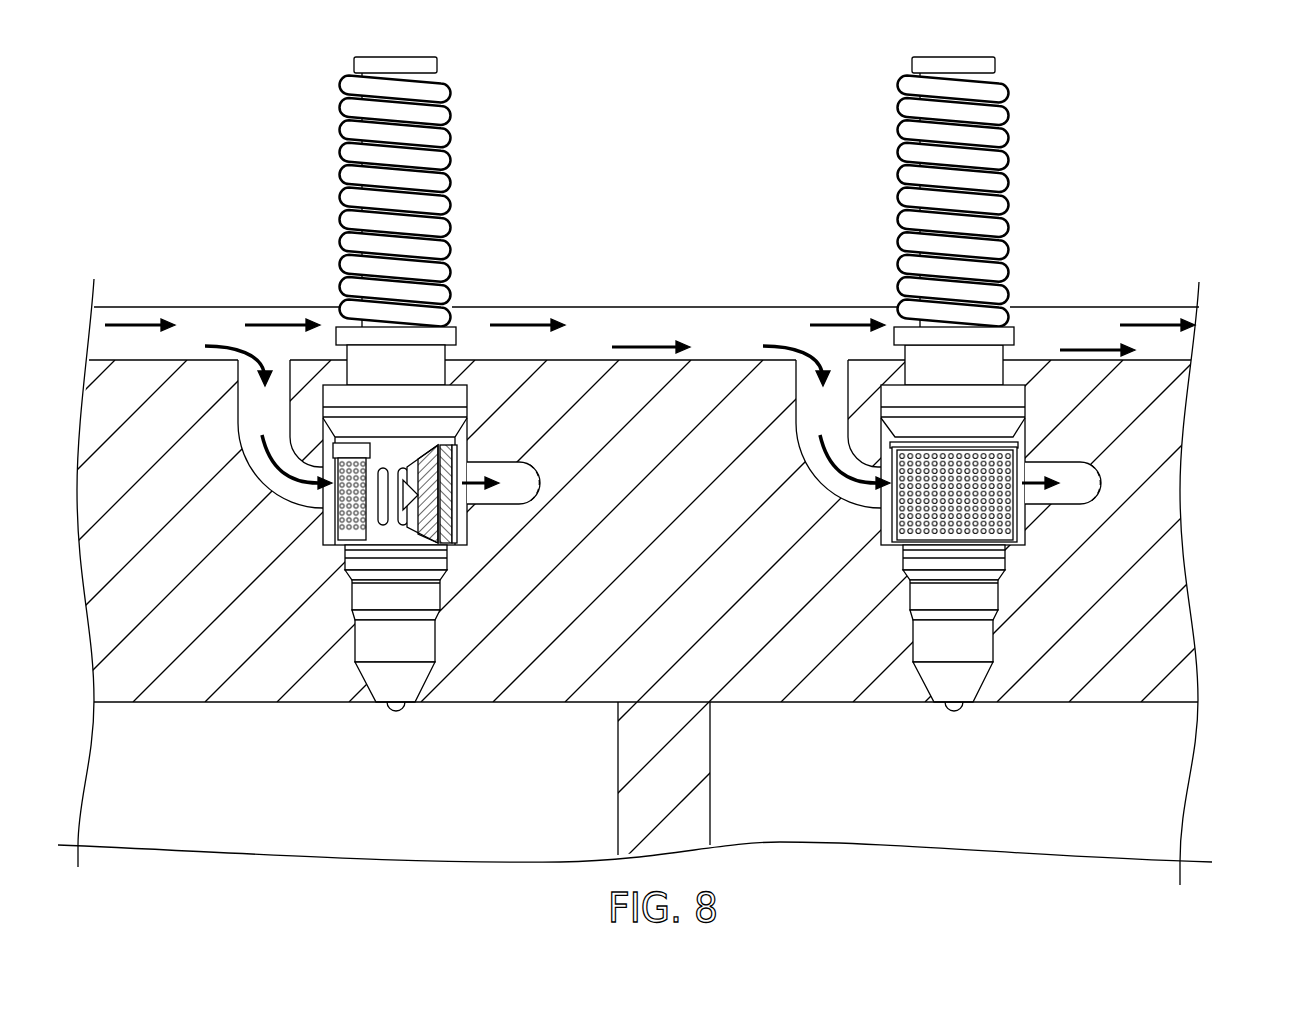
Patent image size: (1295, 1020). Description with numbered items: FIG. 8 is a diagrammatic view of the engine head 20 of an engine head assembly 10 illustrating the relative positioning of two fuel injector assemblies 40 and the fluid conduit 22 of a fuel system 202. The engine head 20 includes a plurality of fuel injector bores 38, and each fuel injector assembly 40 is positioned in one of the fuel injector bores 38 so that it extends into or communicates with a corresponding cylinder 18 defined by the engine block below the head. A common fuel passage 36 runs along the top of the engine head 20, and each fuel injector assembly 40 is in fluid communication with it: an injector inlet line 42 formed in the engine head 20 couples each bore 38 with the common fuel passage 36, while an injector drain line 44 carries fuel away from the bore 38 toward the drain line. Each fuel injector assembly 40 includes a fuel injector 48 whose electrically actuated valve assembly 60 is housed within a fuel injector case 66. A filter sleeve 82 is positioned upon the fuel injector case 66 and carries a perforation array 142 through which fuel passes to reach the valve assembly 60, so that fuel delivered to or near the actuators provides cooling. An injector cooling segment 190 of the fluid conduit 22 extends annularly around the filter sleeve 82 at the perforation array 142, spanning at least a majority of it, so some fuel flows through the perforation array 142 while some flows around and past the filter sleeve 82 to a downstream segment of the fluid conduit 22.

The engine head assembly 10 is at (1217, 196).
The cylinder 18 is at (1182, 750).
The engine head 20 is at (1172, 415).
The fluid conduit 22 is at (208, 307).
The fuel passage 36 is at (710, 307).
The fuel injector bore 38 is at (335, 548).
The fuel injector assembly 40 is at (947, 56).
The injector inlet line 42 is at (238, 380).
The injector drain line 44 is at (538, 468).
The fuel injector 48 is at (1015, 330).
The valve assembly 60 is at (416, 470).
The fuel injector case 66 is at (420, 636).
The filter sleeve 82 is at (328, 470).
The perforation array 142 is at (1000, 512).
The injector cooling segment 190 is at (450, 545).
The fuel system 202 is at (207, 98).